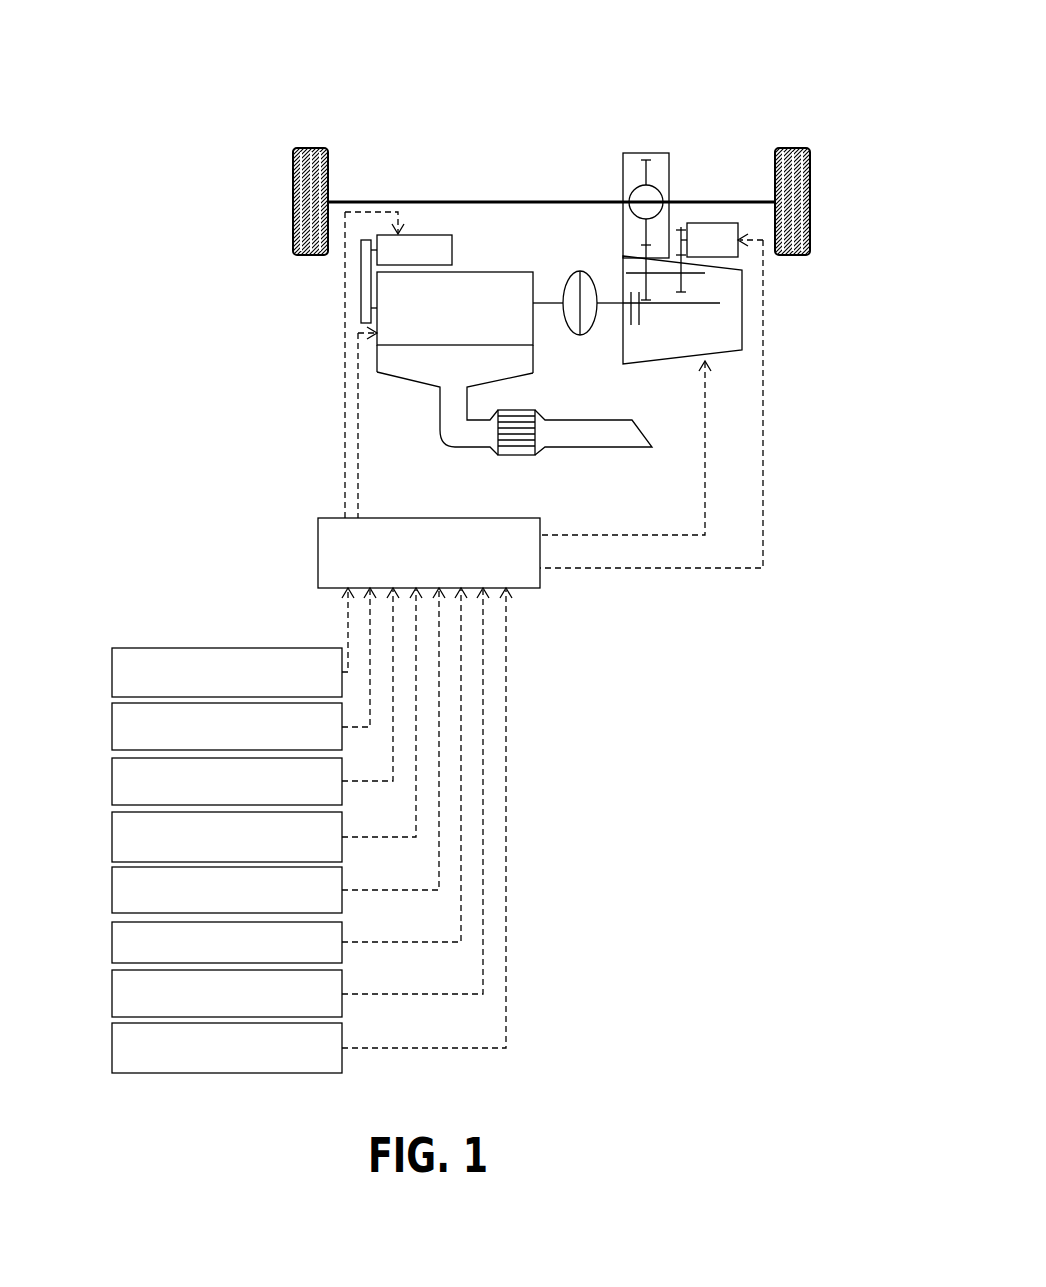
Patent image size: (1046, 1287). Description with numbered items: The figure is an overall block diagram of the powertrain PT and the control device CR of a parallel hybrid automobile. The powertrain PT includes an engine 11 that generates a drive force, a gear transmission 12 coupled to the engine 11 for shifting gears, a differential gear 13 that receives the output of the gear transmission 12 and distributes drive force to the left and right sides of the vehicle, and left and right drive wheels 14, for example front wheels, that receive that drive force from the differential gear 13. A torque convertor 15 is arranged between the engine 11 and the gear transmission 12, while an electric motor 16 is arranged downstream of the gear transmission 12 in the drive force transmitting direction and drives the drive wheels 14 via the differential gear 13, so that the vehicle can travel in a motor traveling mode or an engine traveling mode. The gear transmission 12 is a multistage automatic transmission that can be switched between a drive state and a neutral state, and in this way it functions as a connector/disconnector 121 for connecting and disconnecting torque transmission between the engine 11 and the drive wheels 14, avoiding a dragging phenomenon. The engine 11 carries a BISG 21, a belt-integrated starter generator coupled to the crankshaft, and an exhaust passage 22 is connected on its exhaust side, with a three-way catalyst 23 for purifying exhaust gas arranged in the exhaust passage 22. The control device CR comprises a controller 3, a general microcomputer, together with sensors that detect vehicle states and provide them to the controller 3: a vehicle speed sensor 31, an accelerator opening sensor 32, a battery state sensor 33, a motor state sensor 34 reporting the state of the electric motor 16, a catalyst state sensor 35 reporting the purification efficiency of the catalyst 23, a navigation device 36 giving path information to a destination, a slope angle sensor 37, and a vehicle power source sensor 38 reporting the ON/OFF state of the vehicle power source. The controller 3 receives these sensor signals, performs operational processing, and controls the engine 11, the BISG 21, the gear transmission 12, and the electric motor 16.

The powertrain PT is at (486, 99).
The control device CR is at (536, 687).
The controller 3 is at (540, 588).
The engine 11 is at (533, 338).
The gear transmission 12 is at (664, 358).
The connector/disconnector 121 is at (634, 330).
The differential gear 13 is at (637, 152).
The drive wheels 14 is at (313, 147).
The torque convertor 15 is at (570, 274).
The electric motor 16 is at (706, 222).
The BISG 21 is at (452, 250).
The exhaust passage 22 is at (440, 412).
The catalyst 23 is at (513, 457).
The vehicle speed sensor 31 is at (112, 681).
The accelerator opening sensor 32 is at (112, 736).
The battery state sensor 33 is at (112, 789).
The motor state sensor 34 is at (112, 842).
The catalyst state sensor 35 is at (112, 897).
The navigation device 36 is at (112, 949).
The slope angle sensor 37 is at (112, 1002).
The vehicle power source sensor 38 is at (112, 1054).